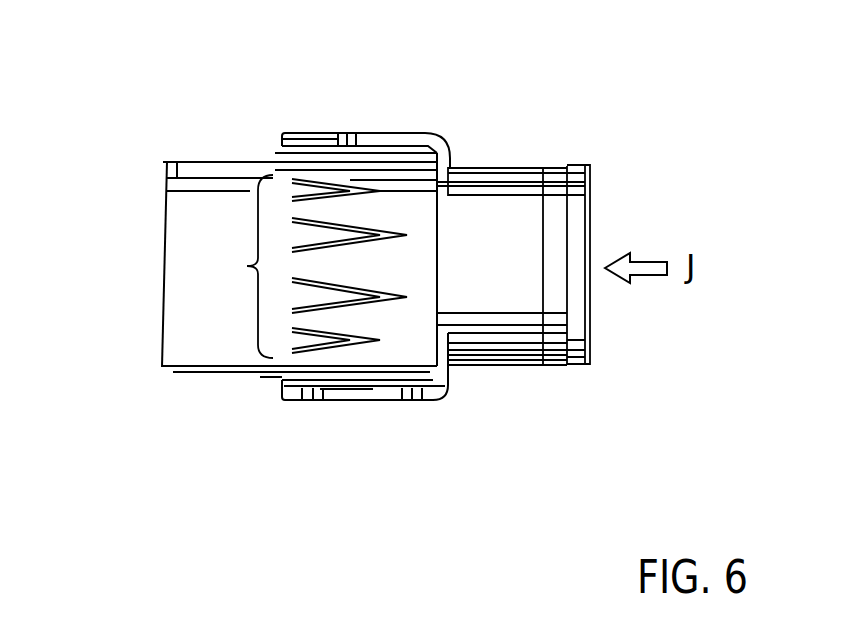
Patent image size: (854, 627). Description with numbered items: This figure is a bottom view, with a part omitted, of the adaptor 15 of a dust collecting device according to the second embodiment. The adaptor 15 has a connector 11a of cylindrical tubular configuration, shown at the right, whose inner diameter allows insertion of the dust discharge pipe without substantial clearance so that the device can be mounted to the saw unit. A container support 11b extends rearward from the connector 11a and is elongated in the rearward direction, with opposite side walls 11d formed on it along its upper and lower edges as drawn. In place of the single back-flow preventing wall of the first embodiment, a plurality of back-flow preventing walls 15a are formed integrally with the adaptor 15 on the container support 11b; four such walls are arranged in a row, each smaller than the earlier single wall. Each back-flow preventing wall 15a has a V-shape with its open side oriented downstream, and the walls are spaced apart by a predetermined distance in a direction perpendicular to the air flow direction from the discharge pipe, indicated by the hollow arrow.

The connector 11a is at (500, 322).
The container support 11b is at (183, 182).
The side walls 11d is at (316, 135).
The adaptor 15 is at (608, 352).
The back-flow preventing walls 15a is at (247, 266).